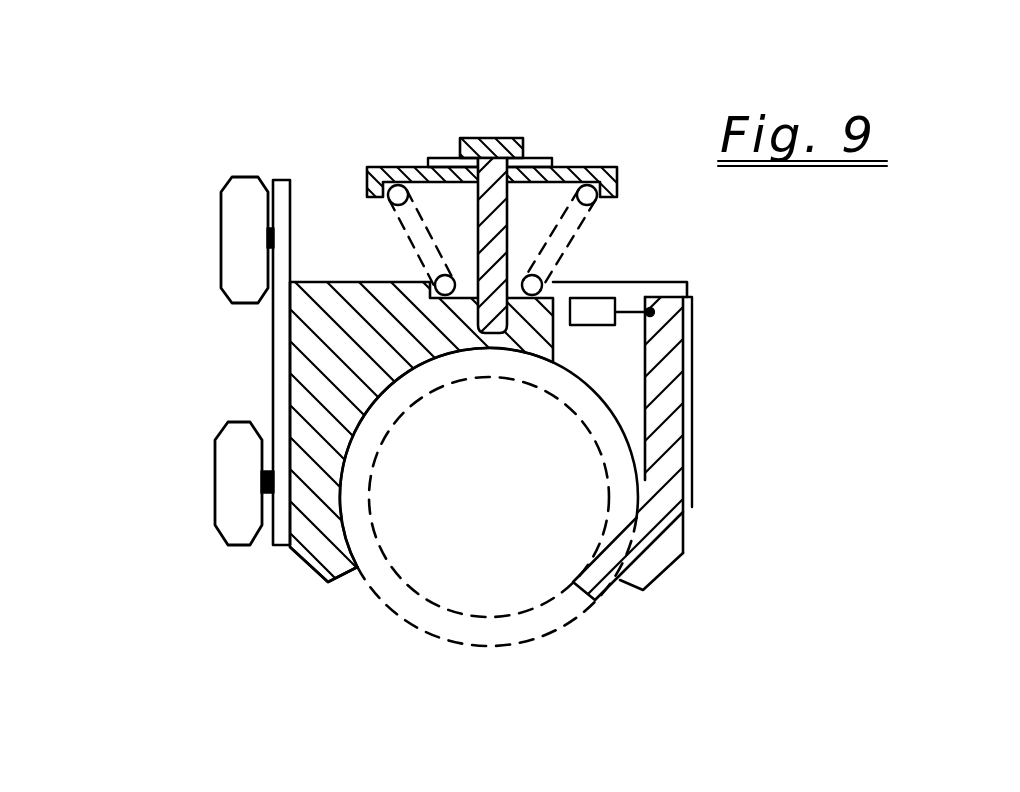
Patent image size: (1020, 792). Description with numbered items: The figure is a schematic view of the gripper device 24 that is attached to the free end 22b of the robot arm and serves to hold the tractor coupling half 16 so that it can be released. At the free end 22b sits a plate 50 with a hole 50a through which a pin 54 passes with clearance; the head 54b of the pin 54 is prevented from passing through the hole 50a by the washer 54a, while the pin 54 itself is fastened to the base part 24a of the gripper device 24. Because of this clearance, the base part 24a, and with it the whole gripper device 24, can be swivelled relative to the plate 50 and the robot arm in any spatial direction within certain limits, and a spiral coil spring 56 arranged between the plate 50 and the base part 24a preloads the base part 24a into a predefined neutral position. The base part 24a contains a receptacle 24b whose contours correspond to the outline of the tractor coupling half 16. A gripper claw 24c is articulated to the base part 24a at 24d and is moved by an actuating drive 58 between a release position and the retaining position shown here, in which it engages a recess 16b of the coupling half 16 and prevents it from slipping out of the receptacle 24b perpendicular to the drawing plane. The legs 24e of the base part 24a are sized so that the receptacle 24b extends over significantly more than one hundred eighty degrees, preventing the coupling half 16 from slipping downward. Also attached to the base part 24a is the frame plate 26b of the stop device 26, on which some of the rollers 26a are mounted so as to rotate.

The tractor coupling half 16 is at (420, 573).
The recess 16b is at (522, 613).
The free end of the robot arm 22b is at (413, 167).
The gripper device 24 is at (832, 280).
The base part 24a is at (318, 298).
The receptacle 24b is at (378, 398).
The gripper claw 24c is at (686, 496).
The articulation point 24d is at (672, 388).
The legs 24e is at (313, 547).
The stop device 26 is at (150, 157).
The rollers 26a is at (233, 242).
The frame plate 26b is at (274, 342).
The plate 50 is at (612, 167).
The hole 50a is at (558, 167).
The pin 54 is at (483, 140).
The washer 54a is at (538, 160).
The head of pin 54b is at (472, 158).
The spiral coil spring 56 is at (417, 240).
The actuating drive 58 is at (598, 312).